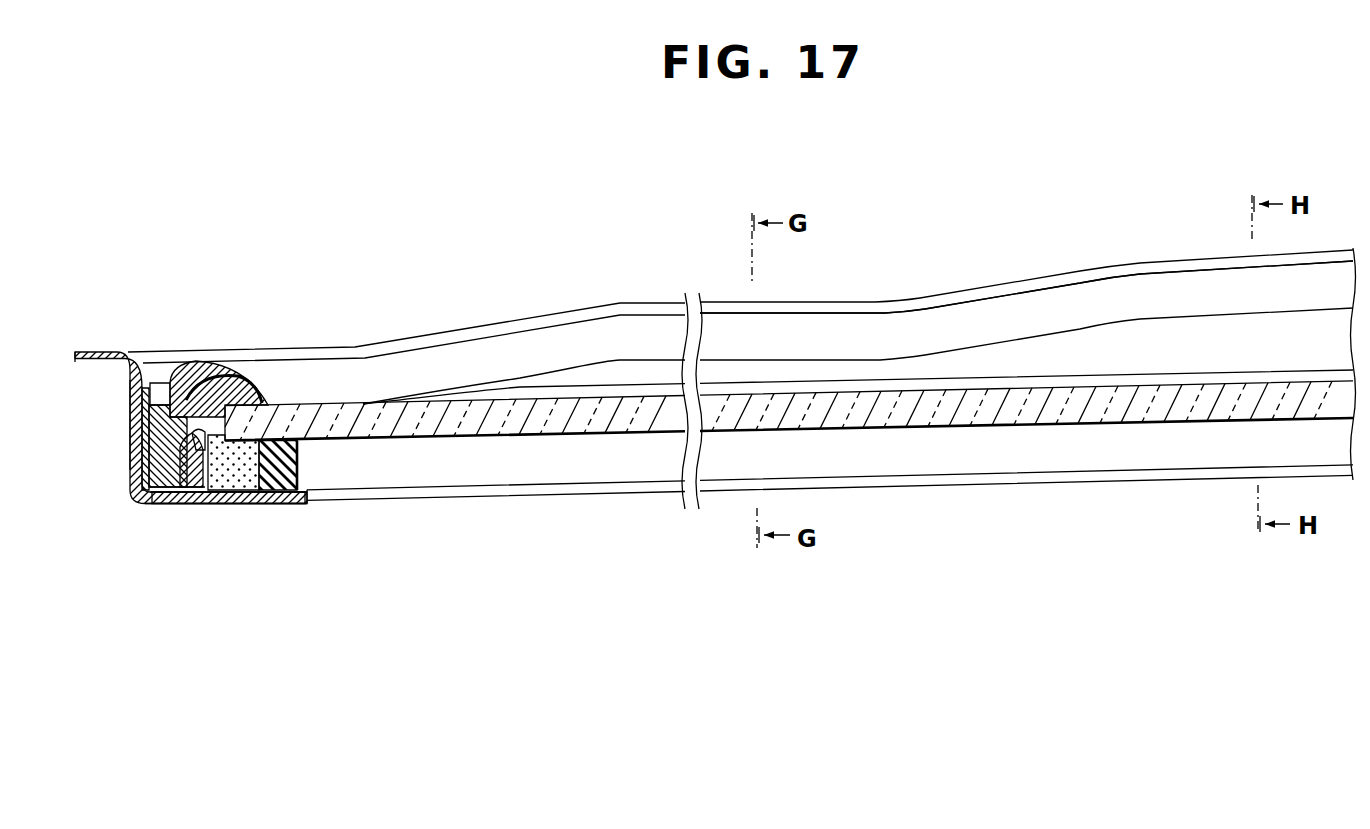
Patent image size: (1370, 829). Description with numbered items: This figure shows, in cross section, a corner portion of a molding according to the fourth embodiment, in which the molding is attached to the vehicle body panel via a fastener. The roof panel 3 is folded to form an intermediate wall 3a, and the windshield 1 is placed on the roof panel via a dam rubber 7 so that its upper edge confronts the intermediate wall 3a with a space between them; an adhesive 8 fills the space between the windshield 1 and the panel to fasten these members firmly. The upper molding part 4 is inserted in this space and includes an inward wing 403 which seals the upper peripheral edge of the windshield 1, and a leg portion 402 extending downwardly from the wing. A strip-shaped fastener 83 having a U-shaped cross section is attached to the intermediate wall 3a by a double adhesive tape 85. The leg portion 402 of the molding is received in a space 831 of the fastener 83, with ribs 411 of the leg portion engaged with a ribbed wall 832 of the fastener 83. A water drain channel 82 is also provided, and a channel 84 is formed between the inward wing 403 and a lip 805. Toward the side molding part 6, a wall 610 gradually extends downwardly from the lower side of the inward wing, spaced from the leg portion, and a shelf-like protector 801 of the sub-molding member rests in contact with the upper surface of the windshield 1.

The windshield 1 is at (405, 427).
The roof panel 3 is at (92, 360).
The intermediate wall 3a is at (131, 438).
The upper molding part 4 is at (324, 347).
The side molding part 6 is at (1019, 260).
The dam rubber 7 is at (297, 504).
The adhesive 8 is at (253, 504).
The water drain channel 82 is at (1053, 353).
The fastener 83 is at (162, 504).
The channel 84 is at (157, 376).
The double adhesive tape 85 is at (150, 460).
The leg portion 402 is at (150, 499).
The inward wing 403 is at (224, 374).
The ribs 411 is at (178, 504).
The wall 610 is at (1154, 335).
The shelf-like protector 801 is at (965, 382).
The lip 805 is at (142, 400).
The space 831 is at (195, 504).
The ribbed wall 832 is at (227, 504).